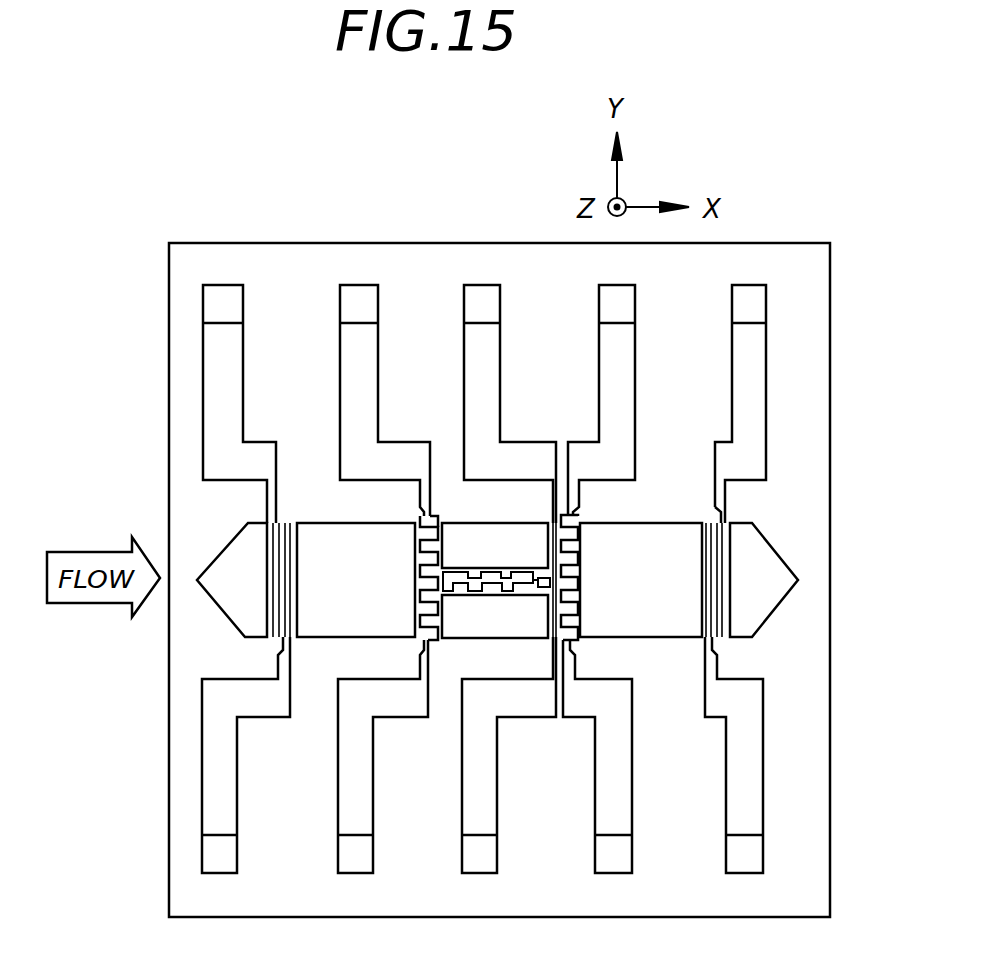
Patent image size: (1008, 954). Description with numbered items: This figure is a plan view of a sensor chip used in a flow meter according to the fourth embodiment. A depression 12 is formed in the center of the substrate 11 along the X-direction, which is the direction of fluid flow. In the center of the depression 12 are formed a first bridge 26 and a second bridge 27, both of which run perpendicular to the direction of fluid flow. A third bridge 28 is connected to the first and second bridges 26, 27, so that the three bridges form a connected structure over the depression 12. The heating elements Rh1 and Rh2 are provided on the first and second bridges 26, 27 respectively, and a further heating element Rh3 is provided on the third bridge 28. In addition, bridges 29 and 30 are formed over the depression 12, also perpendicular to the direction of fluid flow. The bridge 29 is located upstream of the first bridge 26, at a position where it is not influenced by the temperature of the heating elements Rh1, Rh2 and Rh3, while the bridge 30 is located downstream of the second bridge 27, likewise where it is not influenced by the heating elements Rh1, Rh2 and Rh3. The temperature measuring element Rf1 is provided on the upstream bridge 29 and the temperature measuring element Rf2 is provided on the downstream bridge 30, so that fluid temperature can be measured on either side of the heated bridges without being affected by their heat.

The substrate 11 is at (790, 823).
The depression 12 is at (807, 598).
The first bridge 26 is at (413, 594).
The second bridge 27 is at (583, 590).
The third bridge 28 is at (500, 595).
The bridge 29 is at (241, 638).
The bridge 30 is at (752, 630).
The heating element Rh1 is at (420, 558).
The heating element Rh2 is at (580, 570).
The heating element Rh3 is at (492, 575).
The temperature measuring element Rf1 is at (270, 574).
The temperature measuring element Rf2 is at (727, 557).